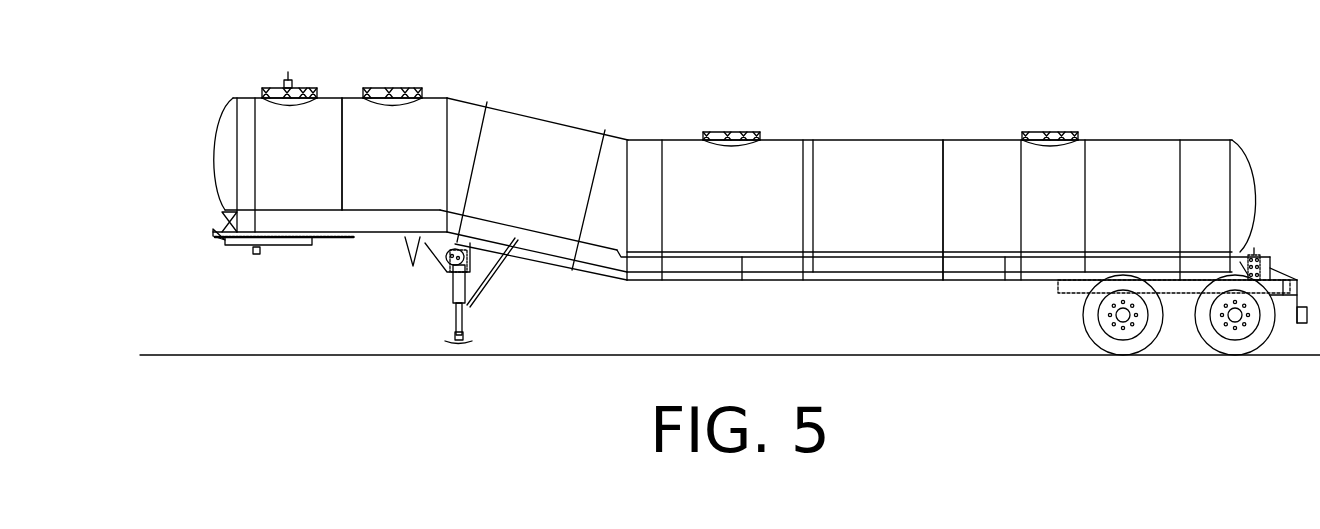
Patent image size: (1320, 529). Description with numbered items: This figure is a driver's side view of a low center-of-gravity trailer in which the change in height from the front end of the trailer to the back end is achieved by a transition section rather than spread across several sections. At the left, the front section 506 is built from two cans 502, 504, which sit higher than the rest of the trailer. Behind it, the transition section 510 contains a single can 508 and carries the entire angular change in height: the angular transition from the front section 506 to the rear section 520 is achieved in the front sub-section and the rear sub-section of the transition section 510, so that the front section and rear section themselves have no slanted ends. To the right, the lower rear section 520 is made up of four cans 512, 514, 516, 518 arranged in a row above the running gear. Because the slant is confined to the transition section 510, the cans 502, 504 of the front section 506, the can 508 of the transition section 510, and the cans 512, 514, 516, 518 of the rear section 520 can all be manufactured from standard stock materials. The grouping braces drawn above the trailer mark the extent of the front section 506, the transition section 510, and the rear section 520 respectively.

The can 502 is at (279, 172).
The can 504 is at (369, 172).
The front section 506 is at (440, 60).
The can 508 is at (512, 185).
The transition section 510 is at (665, 112).
The can 512 is at (716, 215).
The can 514 is at (847, 215).
The can 516 is at (974, 215).
The can 518 is at (1114, 215).
The rear section 520 is at (1252, 113).